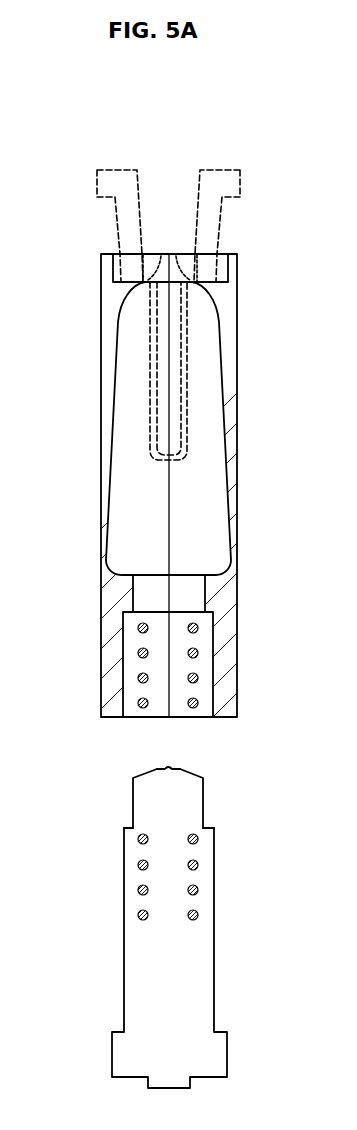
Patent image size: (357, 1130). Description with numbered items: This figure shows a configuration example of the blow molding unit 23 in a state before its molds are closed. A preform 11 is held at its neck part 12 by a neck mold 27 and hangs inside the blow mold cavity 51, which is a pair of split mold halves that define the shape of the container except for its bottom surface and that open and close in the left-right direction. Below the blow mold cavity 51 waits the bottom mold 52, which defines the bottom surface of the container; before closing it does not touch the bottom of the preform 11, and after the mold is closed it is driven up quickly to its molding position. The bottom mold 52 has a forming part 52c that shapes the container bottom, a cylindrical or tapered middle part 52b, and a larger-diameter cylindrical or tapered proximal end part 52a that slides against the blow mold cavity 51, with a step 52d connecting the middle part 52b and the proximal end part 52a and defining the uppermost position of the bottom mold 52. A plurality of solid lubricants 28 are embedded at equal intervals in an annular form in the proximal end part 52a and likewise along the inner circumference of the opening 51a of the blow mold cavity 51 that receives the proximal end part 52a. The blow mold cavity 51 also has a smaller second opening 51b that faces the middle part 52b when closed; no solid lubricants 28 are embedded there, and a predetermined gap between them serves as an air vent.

The blow molding unit 23 is at (240, 141).
The neck part 12 is at (176, 254).
The neck mold 27 is at (222, 212).
The preform 11 is at (192, 385).
The blow mold cavity 51 is at (101, 531).
The opening 51a is at (206, 703).
The second opening 51b is at (135, 600).
The solid lubricants 28 is at (199, 628).
The bottom mold 52 is at (215, 995).
The proximal end part 52a is at (124, 946).
The middle part 52b is at (133, 796).
The forming part 52c is at (152, 771).
The step 52d is at (124, 829).